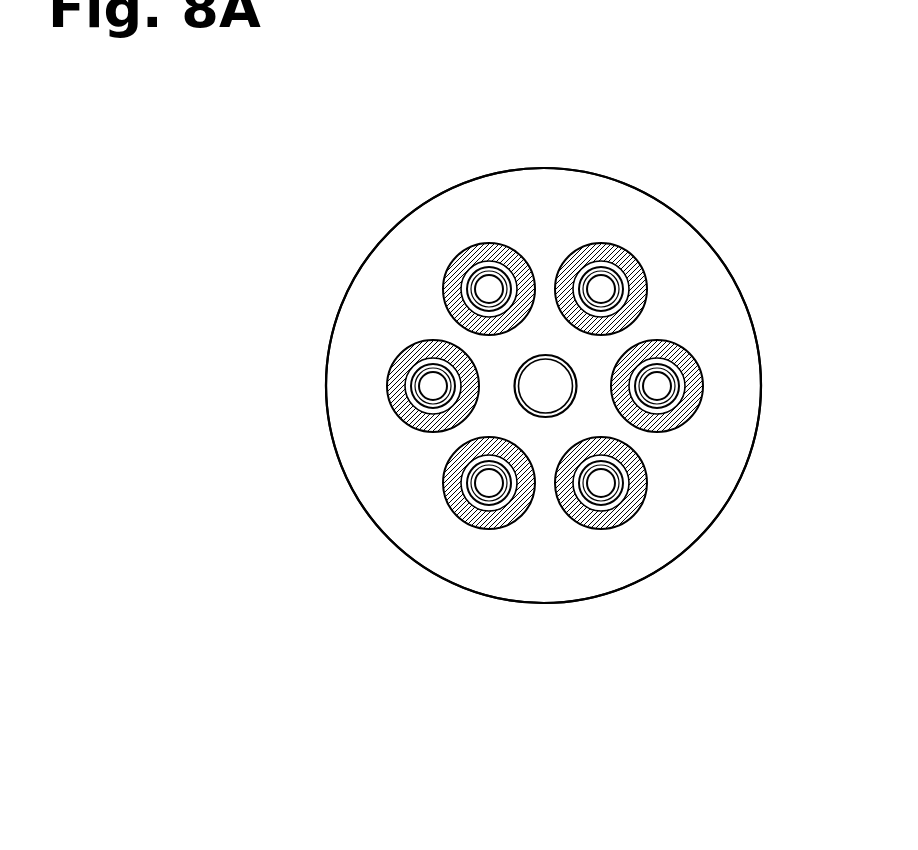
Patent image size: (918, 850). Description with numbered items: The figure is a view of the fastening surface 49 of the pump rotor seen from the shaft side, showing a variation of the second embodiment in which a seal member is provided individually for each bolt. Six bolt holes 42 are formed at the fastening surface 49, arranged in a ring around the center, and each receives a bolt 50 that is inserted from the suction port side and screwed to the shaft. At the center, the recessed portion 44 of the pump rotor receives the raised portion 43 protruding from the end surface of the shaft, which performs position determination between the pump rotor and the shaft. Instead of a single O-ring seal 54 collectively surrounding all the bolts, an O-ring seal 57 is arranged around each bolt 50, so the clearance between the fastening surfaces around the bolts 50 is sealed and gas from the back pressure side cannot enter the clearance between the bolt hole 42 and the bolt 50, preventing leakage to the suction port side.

The bolt hole 42 is at (473, 280).
The raised portion 43 is at (545, 398).
The recessed portion 44 is at (517, 393).
The fastening surface 49 is at (673, 233).
The bolt 50 is at (668, 382).
The O-ring seal 54 is at (682, 492).
The O-ring seal 57 is at (396, 366).